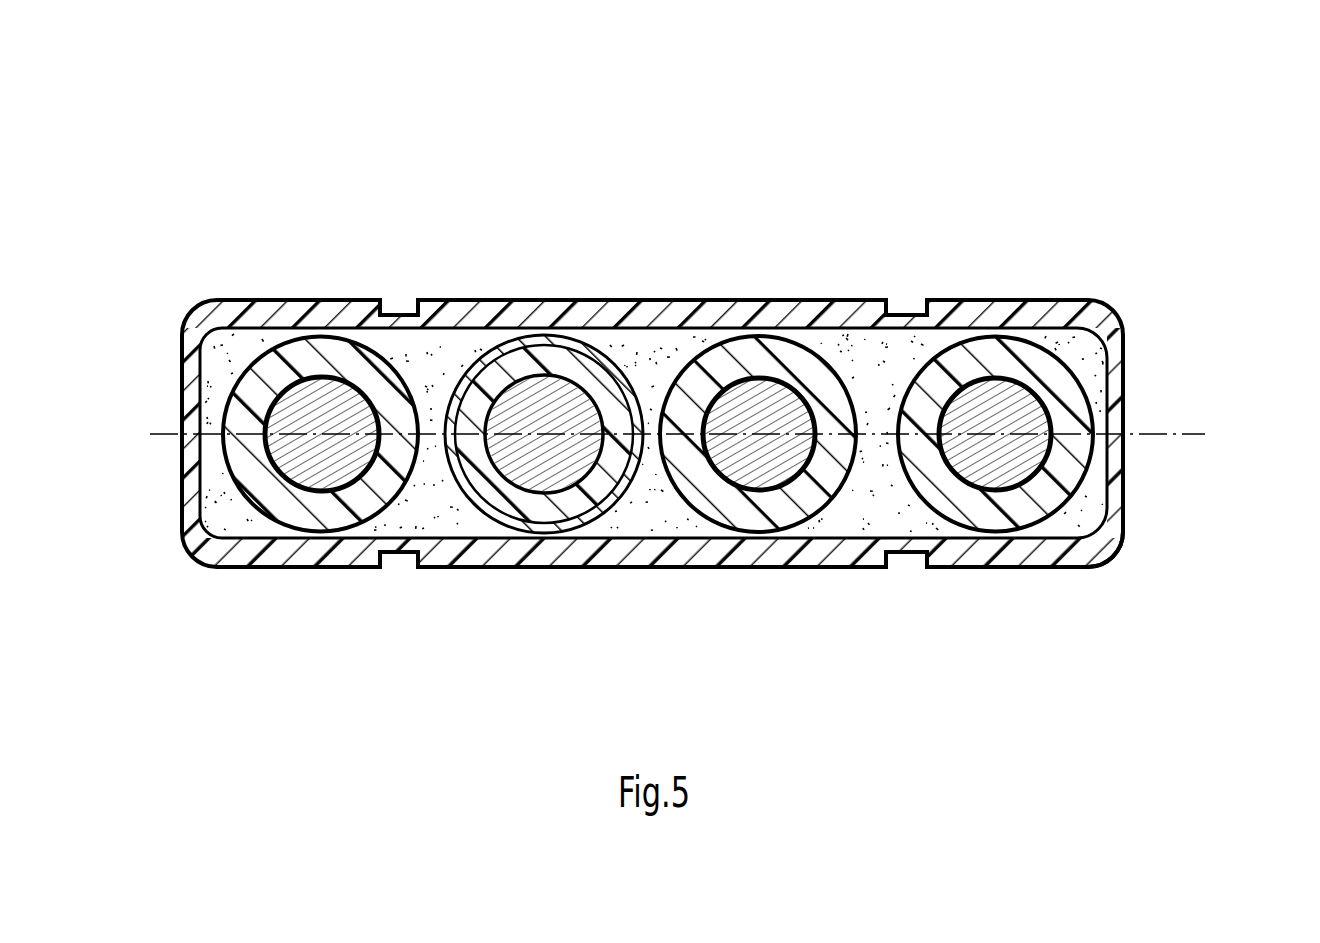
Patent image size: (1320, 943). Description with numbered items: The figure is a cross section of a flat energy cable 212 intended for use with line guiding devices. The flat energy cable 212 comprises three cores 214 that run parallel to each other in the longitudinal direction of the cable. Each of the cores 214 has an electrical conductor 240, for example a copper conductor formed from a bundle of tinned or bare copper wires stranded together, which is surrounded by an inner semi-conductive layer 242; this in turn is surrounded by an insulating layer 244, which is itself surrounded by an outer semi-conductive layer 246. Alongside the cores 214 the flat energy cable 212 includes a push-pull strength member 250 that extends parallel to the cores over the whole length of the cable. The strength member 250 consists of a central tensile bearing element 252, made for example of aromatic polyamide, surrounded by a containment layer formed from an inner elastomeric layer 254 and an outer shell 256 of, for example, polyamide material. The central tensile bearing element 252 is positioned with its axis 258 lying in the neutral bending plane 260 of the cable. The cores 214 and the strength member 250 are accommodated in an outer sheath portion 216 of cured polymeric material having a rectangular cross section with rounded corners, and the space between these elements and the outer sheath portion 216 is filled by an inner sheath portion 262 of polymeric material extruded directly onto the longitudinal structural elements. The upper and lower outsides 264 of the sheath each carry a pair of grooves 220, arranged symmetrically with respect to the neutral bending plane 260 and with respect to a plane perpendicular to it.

The flat energy cable 212 is at (948, 196).
The core 214 is at (332, 347).
The outer sheath portion 216 is at (307, 302).
The grooves 220 is at (397, 303).
The electrical conductor 240 is at (778, 460).
The inner semi-conductive layer 242 is at (996, 490).
The insulating layer 244 is at (998, 367).
The outer semi-conductive layer 246 is at (703, 335).
The push-pull strength member 250 is at (530, 347).
The central tensile bearing element 252 is at (522, 482).
The inner elastomeric layer 254 is at (603, 478).
The outer shell 256 is at (570, 530).
The axis 258 is at (544, 434).
The neutral bending plane 260 is at (1157, 432).
The inner sheath portion 262 is at (1110, 560).
The upper and lower outsides 264 is at (1000, 360).